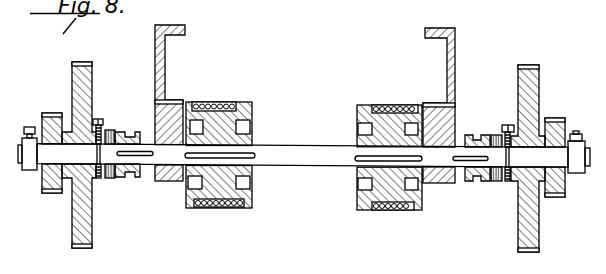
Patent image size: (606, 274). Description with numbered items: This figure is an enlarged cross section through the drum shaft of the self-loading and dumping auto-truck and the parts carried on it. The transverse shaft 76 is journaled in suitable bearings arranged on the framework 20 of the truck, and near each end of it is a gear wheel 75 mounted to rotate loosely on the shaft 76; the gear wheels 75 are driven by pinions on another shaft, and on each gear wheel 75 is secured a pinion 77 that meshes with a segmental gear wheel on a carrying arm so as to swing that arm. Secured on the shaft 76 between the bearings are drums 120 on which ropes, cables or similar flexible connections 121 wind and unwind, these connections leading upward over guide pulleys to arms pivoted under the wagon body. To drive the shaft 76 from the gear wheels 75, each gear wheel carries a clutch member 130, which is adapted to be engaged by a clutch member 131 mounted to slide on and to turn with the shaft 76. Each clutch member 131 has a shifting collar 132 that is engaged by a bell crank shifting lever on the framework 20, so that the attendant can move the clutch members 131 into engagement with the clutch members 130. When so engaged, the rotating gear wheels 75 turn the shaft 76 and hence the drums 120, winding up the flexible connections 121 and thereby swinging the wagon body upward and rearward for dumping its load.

The framework 20 is at (156, 75).
The gear wheels 75 is at (91, 228).
The transverse shaft 76 is at (318, 165).
The pinions 77 is at (51, 128).
The drums 120 is at (252, 118).
The flexible connections 121 is at (212, 104).
The clutch members 130 is at (100, 180).
The clutch members 131 is at (114, 132).
The shifting collars 132 is at (128, 180).